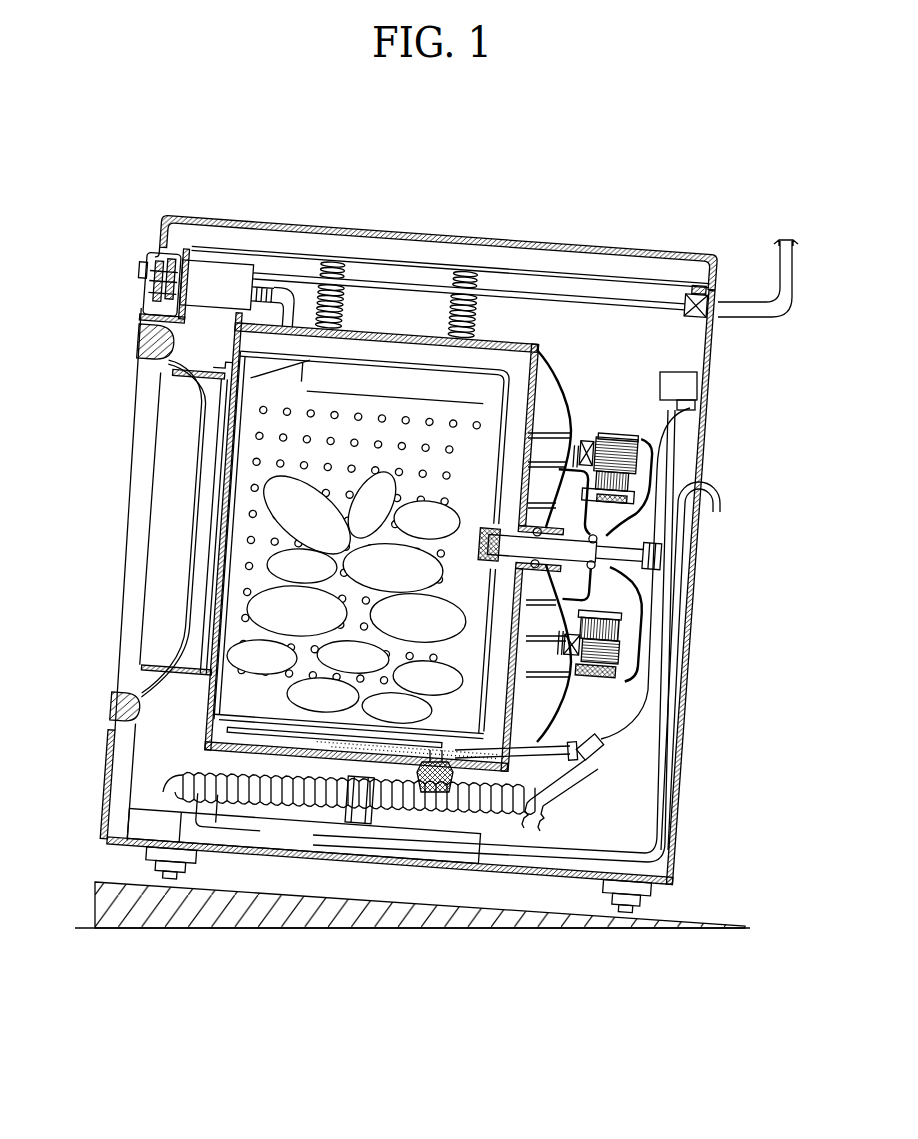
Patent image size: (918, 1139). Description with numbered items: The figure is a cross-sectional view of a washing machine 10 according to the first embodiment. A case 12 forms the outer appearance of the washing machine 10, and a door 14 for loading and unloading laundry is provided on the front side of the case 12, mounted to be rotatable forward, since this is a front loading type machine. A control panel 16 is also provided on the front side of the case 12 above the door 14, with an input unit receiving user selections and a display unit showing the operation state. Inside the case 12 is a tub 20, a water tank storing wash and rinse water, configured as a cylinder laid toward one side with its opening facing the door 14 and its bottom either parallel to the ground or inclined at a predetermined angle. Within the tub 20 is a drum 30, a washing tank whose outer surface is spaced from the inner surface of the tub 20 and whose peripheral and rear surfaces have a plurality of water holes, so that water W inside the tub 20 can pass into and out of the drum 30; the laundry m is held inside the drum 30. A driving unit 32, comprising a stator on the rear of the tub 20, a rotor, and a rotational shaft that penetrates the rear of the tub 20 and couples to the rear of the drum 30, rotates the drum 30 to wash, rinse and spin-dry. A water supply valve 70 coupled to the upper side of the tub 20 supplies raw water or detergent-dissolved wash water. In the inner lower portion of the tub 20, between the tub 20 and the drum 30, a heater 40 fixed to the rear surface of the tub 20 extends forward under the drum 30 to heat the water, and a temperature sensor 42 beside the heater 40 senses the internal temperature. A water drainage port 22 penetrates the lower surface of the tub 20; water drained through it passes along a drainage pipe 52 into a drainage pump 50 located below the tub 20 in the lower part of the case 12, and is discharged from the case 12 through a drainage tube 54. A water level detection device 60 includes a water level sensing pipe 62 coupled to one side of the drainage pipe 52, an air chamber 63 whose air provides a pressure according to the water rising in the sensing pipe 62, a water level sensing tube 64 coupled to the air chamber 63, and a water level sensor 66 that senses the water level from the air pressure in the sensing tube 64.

The washing machine 10 is at (145, 150).
The case 12 is at (258, 215).
The door 14 is at (133, 521).
The control panel 16 is at (142, 270).
The tub 20 is at (507, 342).
The water drainage port 22 is at (431, 792).
The drum 30 is at (392, 352).
The driving unit 32 is at (611, 435).
The heater 40 is at (312, 750).
The temperature sensor 42 is at (491, 772).
The drainage pump 50 is at (148, 818).
The drainage pipe 52 is at (160, 782).
The drainage tube 54 is at (578, 872).
The water level detection device 60 is at (773, 839).
The water level sensing pipe 62 is at (522, 810).
The air chamber 63 is at (580, 768).
The water level sensing tube 64 is at (655, 672).
The water level sensor 66 is at (688, 380).
The water supply valve 70 is at (289, 296).
The water W is at (396, 753).
The laundry m is at (347, 594).